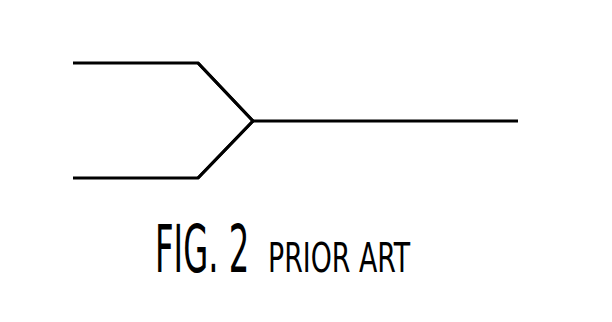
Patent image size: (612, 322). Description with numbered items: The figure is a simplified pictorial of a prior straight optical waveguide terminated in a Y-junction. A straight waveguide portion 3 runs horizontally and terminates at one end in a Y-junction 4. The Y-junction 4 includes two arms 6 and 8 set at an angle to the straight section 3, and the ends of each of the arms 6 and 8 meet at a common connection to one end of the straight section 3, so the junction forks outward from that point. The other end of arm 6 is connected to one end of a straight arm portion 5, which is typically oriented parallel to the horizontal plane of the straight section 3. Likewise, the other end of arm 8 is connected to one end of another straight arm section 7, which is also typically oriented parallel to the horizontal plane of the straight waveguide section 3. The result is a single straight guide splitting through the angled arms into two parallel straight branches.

The straight waveguide portion 3 is at (463, 121).
The Y-junction 4 is at (291, 97).
The straight arm portion 5 is at (118, 62).
The arm 6 is at (218, 83).
The straight arm section 7 is at (227, 147).
The arm 8 is at (165, 178).